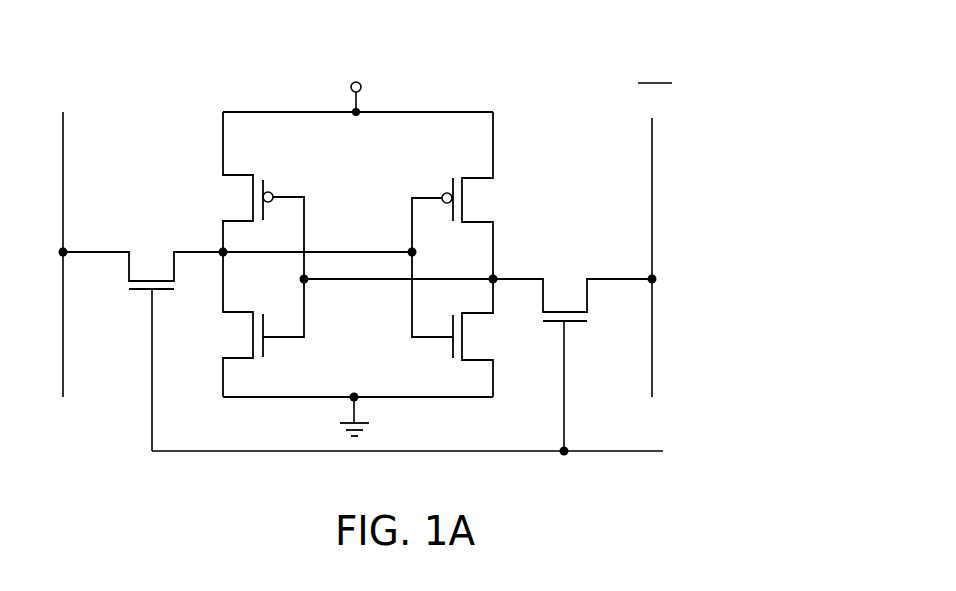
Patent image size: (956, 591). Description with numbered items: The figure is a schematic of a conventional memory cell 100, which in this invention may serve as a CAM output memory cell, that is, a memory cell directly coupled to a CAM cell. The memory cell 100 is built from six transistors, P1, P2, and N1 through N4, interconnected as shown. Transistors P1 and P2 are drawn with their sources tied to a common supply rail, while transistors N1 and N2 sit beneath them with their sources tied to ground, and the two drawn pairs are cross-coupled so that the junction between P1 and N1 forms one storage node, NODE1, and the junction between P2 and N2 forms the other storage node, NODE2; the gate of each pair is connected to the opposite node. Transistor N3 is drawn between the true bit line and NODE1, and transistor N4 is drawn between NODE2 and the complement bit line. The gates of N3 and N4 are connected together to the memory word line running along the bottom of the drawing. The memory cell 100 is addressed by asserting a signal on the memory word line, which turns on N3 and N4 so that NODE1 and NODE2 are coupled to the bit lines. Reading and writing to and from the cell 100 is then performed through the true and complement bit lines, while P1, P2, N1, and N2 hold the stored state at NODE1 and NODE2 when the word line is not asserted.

The memory cell 100 is at (122, 48).
The transistor P1 is at (250, 195).
The transistor P2 is at (464, 195).
The transistor N1 is at (250, 324).
The transistor N2 is at (464, 324).
The transistor N3 is at (141, 334).
The transistor N4 is at (575, 348).
The first storage node NODE1 is at (216, 243).
The second storage node NODE2 is at (505, 258).